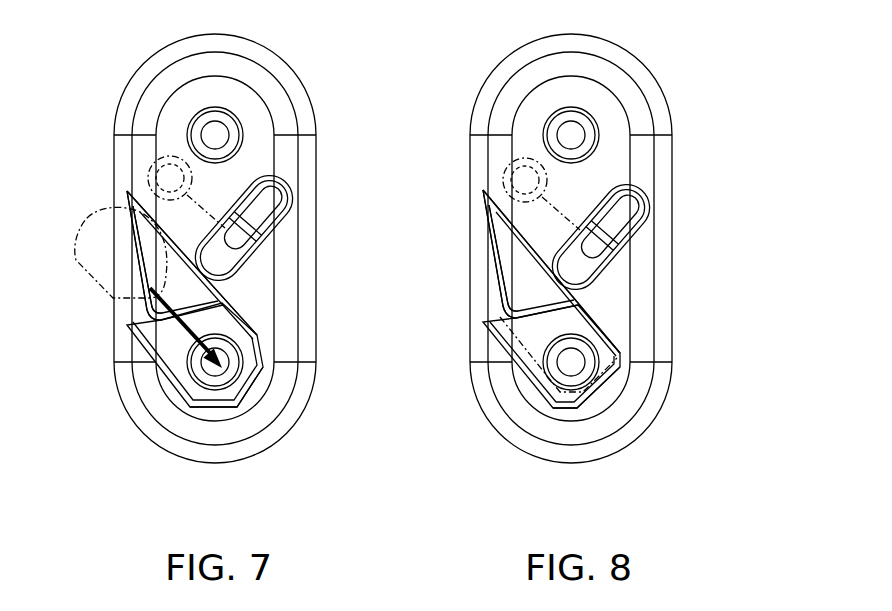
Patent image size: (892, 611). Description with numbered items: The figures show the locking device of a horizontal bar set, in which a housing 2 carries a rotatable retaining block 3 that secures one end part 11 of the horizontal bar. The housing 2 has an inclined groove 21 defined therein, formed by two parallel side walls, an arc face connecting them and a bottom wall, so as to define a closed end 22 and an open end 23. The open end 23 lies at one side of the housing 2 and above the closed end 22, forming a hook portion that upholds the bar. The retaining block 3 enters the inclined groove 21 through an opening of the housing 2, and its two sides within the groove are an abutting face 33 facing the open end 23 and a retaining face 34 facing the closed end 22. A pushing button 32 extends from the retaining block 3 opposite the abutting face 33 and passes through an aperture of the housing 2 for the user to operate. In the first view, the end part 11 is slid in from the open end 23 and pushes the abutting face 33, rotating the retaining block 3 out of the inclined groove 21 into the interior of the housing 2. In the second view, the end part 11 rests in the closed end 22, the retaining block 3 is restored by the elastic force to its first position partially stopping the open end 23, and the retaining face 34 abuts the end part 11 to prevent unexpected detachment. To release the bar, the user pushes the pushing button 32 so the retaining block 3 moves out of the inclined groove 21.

In FIG. 7, the housing 2 is at (150, 68).
In FIG. 8, the housing 2 is at (508, 64).
In FIG. 7, the retaining block 3 is at (200, 291).
In FIG. 8, the retaining block 3 is at (540, 292).
In FIG. 7, the end part of the horizontal bar 11 is at (87, 218).
In FIG. 8, the end part of the horizontal bar 11 is at (578, 417).
In FIG. 7, the inclined groove 21 is at (176, 365).
In FIG. 8, the inclined groove 21 is at (513, 343).
In FIG. 7, the closed end 22 is at (262, 403).
In FIG. 8, the closed end 22 is at (615, 399).
In FIG. 7, the open end 23 is at (112, 311).
In FIG. 8, the open end 23 is at (470, 226).
In FIG. 7, the pushing button 32 is at (263, 198).
In FIG. 8, the pushing button 32 is at (612, 225).
In FIG. 7, the abutting face 33 is at (158, 333).
In FIG. 8, the abutting face 33 is at (508, 272).
In FIG. 7, the retaining face 34 is at (243, 327).
In FIG. 8, the retaining face 34 is at (515, 322).